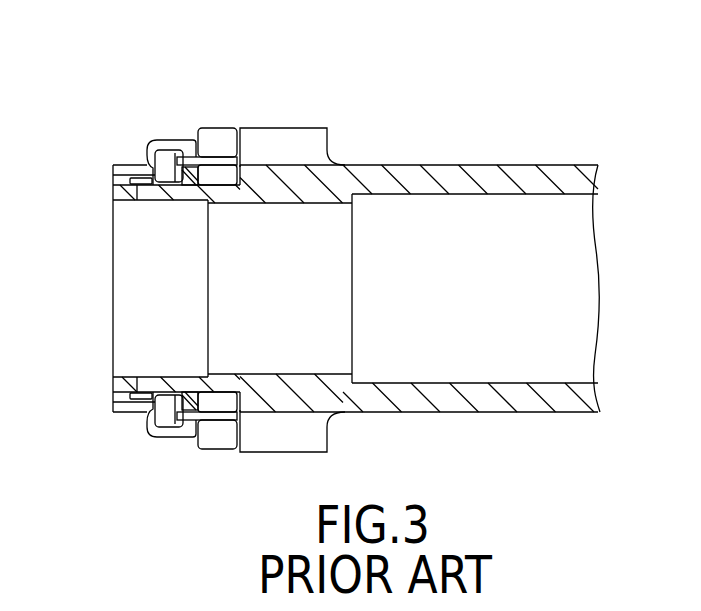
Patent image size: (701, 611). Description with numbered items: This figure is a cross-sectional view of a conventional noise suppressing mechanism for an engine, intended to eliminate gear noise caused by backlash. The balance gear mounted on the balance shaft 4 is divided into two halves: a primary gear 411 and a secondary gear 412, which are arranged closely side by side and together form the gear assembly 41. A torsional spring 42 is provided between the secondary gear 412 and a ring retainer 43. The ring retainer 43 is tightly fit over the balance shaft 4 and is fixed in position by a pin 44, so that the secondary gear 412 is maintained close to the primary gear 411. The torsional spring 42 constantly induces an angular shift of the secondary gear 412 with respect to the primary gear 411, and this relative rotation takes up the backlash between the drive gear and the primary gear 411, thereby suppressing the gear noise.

The balance shaft 4 is at (457, 165).
The nut 41 is at (268, 110).
The primary gear 411 is at (307, 137).
The secondary gear 412 is at (225, 140).
The torsional spring 42 is at (172, 167).
The ring retainer 43 is at (153, 142).
The pin 44 is at (123, 185).